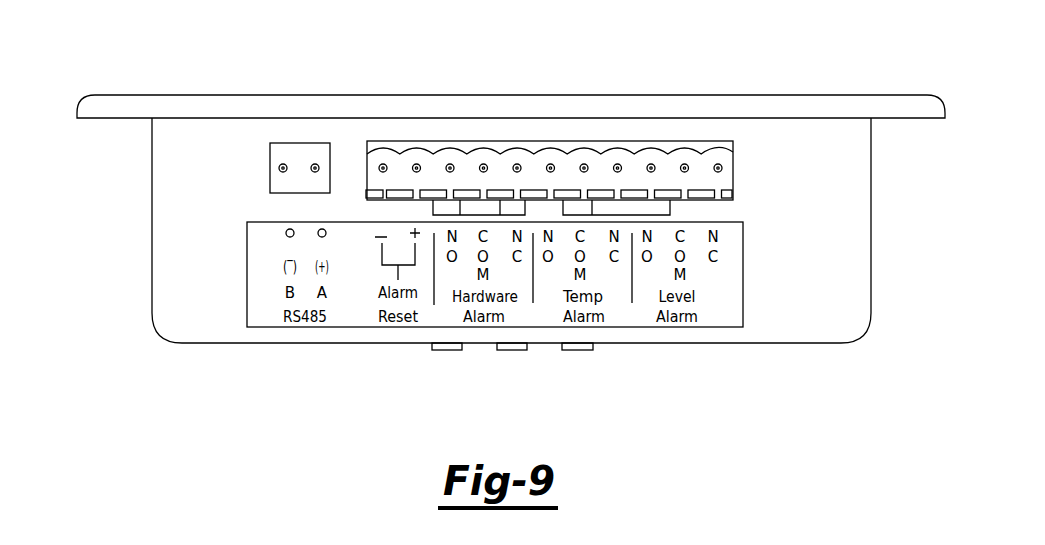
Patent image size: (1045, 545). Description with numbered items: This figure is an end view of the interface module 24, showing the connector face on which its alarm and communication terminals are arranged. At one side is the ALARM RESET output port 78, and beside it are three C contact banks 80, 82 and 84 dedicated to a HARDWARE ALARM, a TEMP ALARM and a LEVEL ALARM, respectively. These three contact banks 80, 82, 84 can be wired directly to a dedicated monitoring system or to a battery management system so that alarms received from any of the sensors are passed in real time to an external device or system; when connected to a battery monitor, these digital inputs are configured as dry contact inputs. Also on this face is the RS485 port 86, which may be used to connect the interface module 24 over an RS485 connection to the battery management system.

The interface module 24 is at (65, 103).
The ALARM RESET output port 78 is at (384, 164).
The HARDWARE ALARM contact bank 80 is at (517, 164).
The TEMP ALARM contact bank 82 is at (617, 164).
The LEVEL ALARM contact bank 84 is at (651, 164).
The RS485 port 86 is at (315, 164).